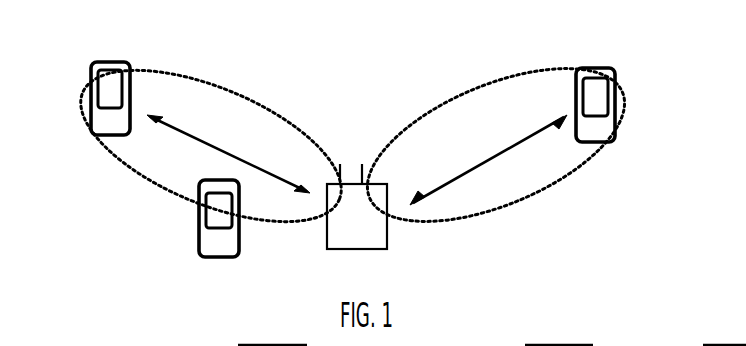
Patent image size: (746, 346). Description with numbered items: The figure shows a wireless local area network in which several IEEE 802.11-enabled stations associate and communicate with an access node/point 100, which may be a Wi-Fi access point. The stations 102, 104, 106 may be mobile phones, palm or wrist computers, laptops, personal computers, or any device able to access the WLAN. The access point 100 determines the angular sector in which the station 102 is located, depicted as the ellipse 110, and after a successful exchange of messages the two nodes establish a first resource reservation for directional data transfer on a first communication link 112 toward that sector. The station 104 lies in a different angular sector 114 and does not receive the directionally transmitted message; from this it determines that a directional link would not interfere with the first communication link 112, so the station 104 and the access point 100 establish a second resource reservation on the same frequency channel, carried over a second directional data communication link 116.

The access node/point (AP) 100 is at (380, 250).
The station (STA) 102 is at (91, 116).
The station (STA) 104 is at (614, 97).
The station (STA) 106 is at (199, 222).
The angular sector 110 is at (200, 62).
The first communication link 112 is at (205, 123).
The angular sector 114 is at (552, 68).
The second directional data communication link 116 is at (501, 148).